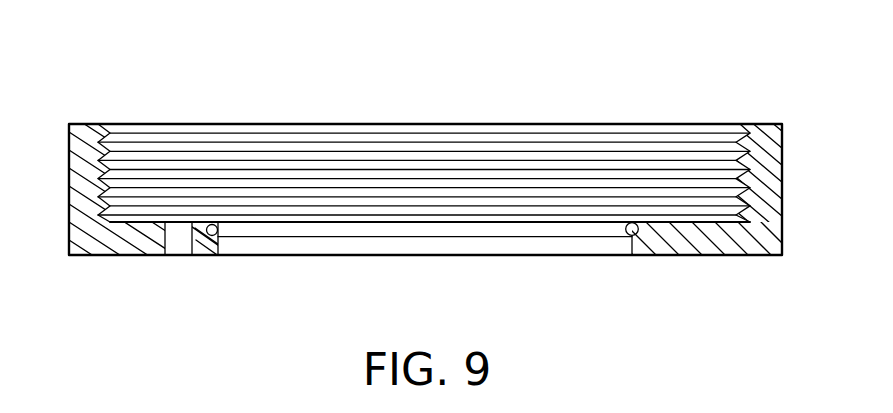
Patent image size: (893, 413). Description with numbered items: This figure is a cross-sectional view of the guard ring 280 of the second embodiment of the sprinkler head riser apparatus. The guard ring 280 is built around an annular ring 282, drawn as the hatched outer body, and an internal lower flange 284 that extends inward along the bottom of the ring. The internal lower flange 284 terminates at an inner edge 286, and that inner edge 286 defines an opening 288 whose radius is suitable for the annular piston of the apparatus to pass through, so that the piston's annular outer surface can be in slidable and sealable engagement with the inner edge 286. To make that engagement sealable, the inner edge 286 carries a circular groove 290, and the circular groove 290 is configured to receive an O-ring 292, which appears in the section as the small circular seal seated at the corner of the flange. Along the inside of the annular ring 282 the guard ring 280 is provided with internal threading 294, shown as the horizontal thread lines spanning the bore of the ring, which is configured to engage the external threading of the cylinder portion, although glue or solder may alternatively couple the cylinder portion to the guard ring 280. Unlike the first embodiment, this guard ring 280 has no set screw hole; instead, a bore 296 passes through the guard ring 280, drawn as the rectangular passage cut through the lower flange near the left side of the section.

The guard ring 280 is at (419, 106).
The annular ring 282 is at (783, 193).
The internal lower flange 284 is at (708, 240).
The inner edge 286 is at (628, 238).
The opening 288 is at (502, 242).
The circular groove 290 is at (640, 226).
The O-ring 292 is at (626, 225).
The internal threading 294 is at (726, 122).
The bore 296 is at (178, 237).